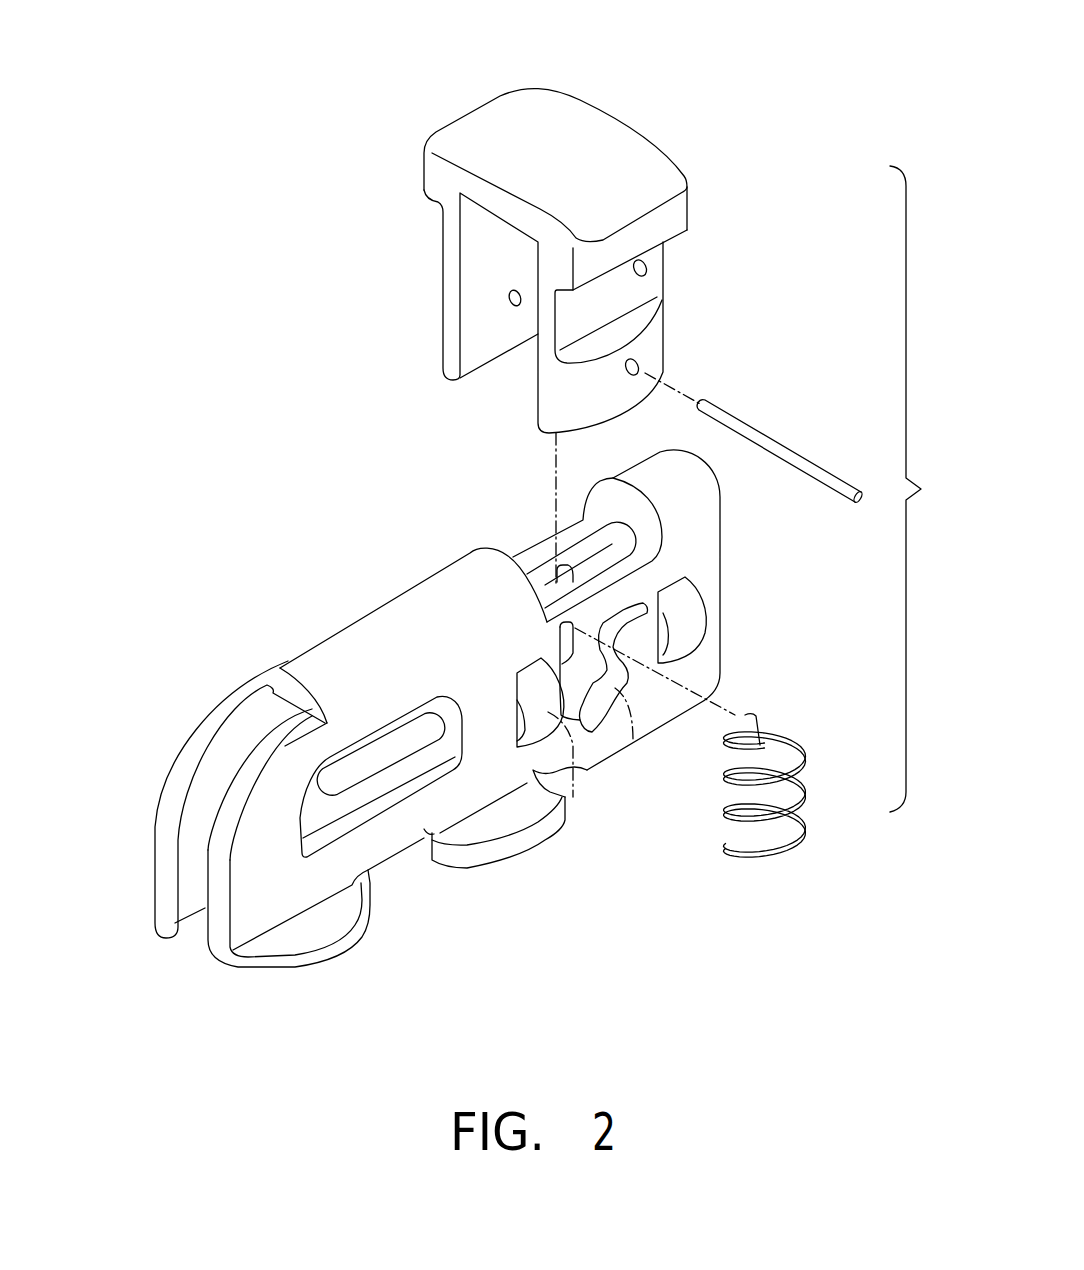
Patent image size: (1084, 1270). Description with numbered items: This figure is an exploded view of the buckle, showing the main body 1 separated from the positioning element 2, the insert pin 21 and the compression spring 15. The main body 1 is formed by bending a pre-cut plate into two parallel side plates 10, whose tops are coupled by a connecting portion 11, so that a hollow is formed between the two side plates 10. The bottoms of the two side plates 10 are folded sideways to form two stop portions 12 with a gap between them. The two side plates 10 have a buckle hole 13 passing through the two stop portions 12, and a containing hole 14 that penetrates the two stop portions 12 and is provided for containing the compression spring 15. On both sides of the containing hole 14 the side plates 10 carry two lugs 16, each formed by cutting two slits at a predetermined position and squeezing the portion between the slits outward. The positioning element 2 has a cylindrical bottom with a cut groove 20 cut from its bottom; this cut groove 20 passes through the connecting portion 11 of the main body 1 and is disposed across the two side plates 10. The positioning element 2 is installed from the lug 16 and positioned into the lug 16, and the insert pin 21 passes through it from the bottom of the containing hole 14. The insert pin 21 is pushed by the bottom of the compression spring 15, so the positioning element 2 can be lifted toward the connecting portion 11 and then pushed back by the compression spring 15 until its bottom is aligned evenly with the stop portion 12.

The main body 1 is at (264, 633).
The positioning element 2 is at (532, 100).
The side plates 10 is at (163, 865).
The connecting portion 11 is at (380, 620).
The stop portions 12 is at (538, 855).
The buckle hole 13 is at (388, 822).
The containing hole 14 is at (596, 667).
The compression spring 15 is at (793, 723).
The lugs 16 is at (697, 620).
The cut groove 20 is at (500, 248).
The insert pin 21 is at (747, 423).